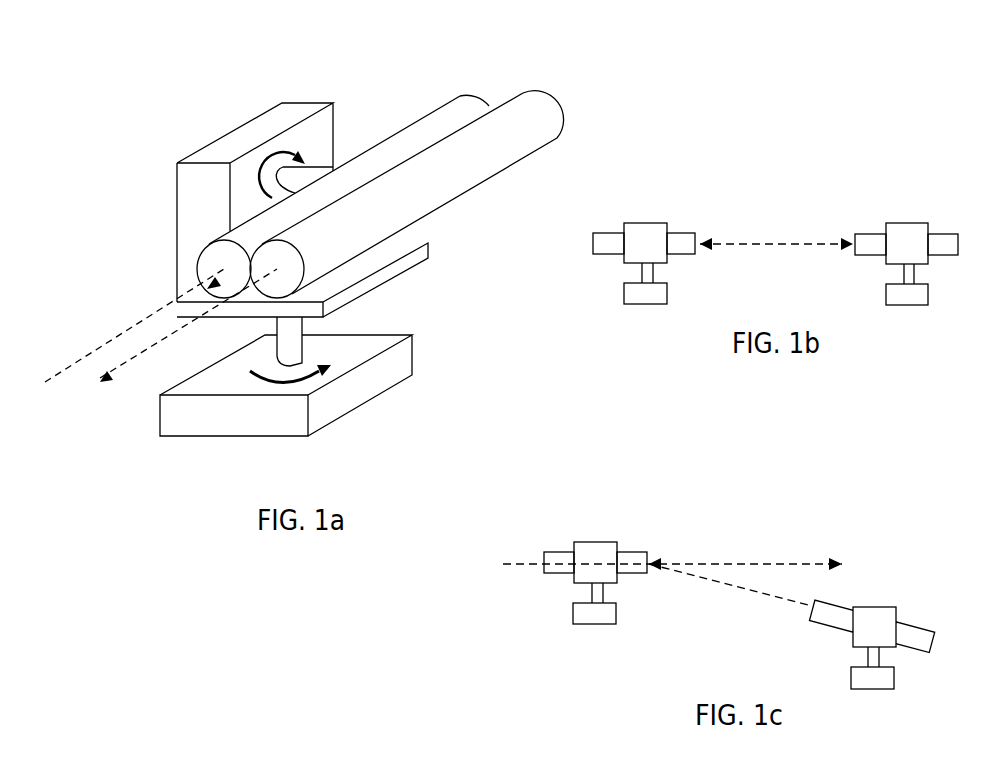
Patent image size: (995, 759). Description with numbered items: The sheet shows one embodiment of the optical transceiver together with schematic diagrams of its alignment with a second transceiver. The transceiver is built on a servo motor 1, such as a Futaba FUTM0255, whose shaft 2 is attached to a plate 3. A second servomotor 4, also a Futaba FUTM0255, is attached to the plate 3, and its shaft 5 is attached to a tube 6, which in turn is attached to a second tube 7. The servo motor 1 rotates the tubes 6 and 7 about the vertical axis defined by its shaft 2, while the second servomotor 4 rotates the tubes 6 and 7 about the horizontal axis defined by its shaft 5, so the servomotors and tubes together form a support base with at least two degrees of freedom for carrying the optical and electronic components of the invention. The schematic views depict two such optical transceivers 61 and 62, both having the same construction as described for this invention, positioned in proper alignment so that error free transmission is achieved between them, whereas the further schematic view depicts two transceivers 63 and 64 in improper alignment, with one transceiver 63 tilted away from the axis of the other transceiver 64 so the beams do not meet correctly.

In FIG. 1a, the servo motor 1 is at (377, 343).
In FIG. 1a, the shaft 2 is at (288, 330).
In FIG. 1a, the plate 3 is at (390, 252).
In FIG. 1a, the second servomotor 4 is at (197, 200).
In FIG. 1a, the shaft 5 is at (315, 172).
In FIG. 1a, the tube 6 is at (465, 118).
In FIG. 1a, the second tube 7 is at (537, 122).
In FIG. 1b, the optical transceiver 61 is at (867, 240).
In FIG. 1b, the optical transceiver 62 is at (682, 238).
In FIG. 1c, the first measuring device tilted 63 is at (837, 612).
In FIG. 1c, the second measuring device 64 is at (637, 560).